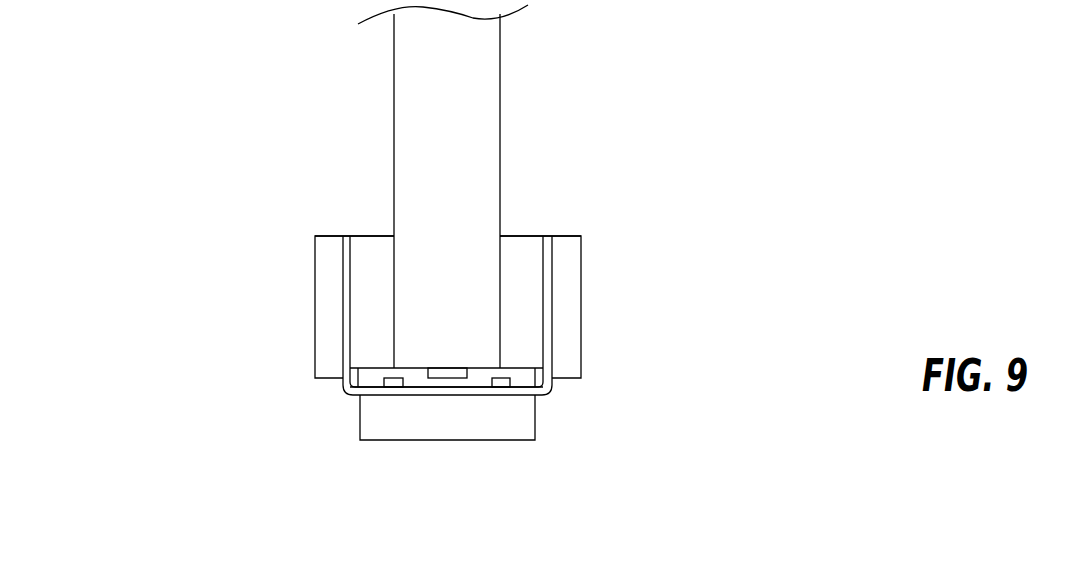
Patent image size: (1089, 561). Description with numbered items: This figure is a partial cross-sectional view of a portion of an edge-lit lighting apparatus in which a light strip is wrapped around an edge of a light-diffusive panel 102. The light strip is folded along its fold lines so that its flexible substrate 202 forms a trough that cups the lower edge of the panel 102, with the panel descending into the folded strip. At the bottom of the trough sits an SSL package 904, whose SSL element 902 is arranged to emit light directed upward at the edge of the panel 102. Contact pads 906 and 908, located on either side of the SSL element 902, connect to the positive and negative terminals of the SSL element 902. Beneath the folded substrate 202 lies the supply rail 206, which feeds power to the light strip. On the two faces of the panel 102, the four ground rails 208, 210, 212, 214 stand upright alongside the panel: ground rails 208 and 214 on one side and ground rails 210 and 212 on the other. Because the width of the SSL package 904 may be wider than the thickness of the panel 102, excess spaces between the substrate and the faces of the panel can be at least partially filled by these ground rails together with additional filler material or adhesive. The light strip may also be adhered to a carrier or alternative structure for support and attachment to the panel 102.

The light-diffusive panel 102 is at (500, 58).
The flexible substrate 202 is at (345, 393).
The supply rail 206 is at (360, 442).
The ground rail 208 is at (375, 234).
The ground rail 210 is at (520, 234).
The ground rail 212 is at (581, 306).
The ground rail 214 is at (315, 307).
The SSL element 902 is at (448, 365).
The SSL package 904 is at (422, 380).
The contact pad 906 is at (407, 380).
The contact pad 908 is at (483, 382).